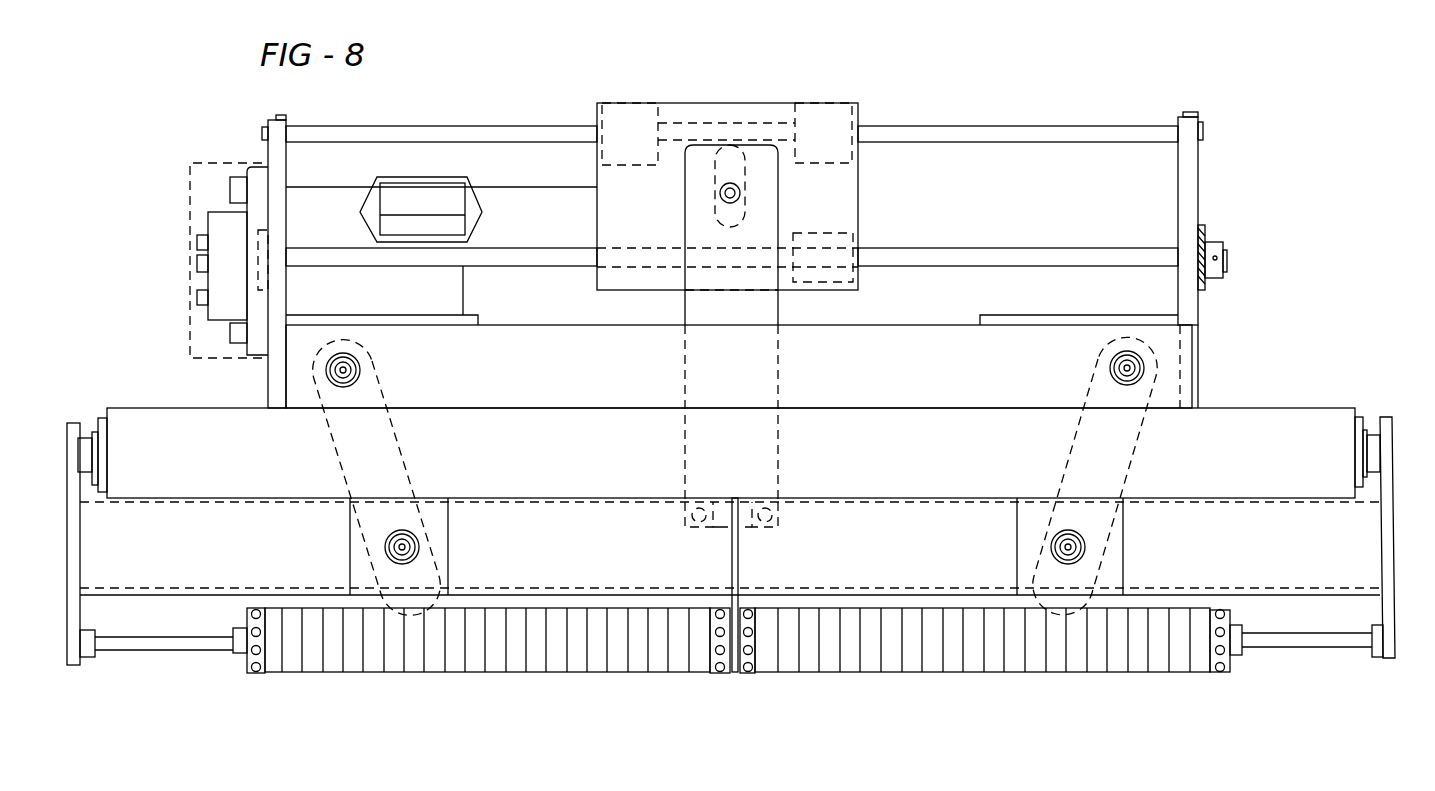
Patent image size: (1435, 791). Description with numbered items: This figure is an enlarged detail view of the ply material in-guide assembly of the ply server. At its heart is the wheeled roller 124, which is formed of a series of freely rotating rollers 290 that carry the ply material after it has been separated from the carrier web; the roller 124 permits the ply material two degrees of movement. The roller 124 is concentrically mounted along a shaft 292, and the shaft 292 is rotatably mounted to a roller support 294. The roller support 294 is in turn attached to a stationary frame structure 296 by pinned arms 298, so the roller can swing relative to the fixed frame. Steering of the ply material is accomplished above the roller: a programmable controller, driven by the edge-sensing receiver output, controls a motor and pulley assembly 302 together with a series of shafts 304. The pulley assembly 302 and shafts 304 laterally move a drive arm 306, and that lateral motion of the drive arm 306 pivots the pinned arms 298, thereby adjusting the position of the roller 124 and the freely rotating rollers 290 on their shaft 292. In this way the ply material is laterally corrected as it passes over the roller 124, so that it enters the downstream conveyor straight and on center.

The wheeled roller 124 is at (738, 674).
The freely rotating rollers 290 is at (478, 672).
The shaft 292 is at (175, 642).
The roller support 294 is at (1385, 555).
The stationary frame structure 296 is at (1188, 348).
The pinned arms 298 is at (405, 450).
The motor and pulley assembly 302 is at (183, 272).
The shafts 304 is at (505, 133).
The drive arm 306 is at (768, 313).